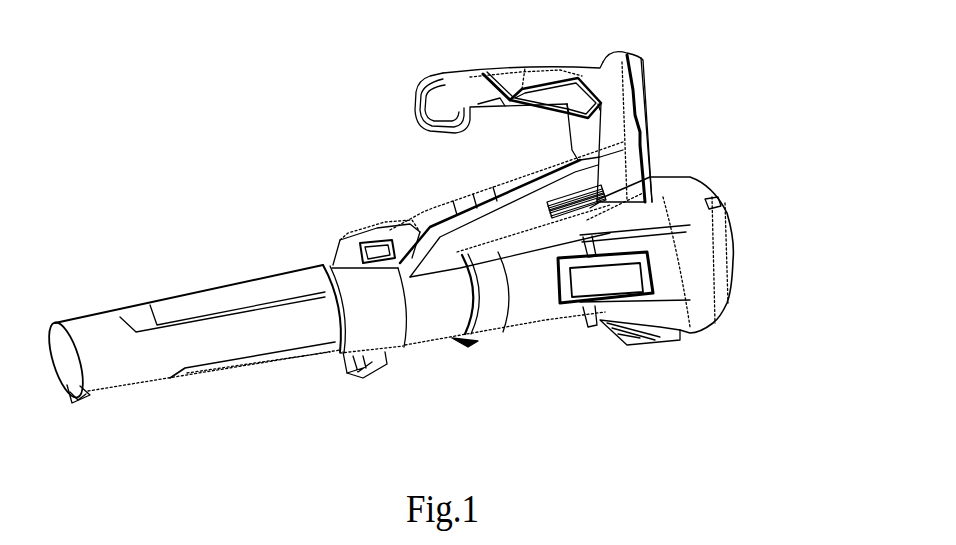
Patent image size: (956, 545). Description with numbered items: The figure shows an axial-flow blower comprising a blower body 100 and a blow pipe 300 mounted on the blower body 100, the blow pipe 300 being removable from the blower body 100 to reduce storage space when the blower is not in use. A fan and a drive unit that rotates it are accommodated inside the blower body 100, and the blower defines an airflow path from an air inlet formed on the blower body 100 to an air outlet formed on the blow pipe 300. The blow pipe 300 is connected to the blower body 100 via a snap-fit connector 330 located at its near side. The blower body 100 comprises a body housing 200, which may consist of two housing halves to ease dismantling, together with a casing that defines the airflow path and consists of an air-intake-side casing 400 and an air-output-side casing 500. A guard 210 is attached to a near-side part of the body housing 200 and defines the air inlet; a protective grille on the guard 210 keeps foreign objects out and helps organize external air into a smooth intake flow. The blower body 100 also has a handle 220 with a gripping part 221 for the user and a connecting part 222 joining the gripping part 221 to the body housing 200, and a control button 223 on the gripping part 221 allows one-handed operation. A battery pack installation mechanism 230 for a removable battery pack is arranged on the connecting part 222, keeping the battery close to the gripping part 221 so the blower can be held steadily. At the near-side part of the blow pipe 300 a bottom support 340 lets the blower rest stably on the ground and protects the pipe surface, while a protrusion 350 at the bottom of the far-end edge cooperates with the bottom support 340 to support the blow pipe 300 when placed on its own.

The blower body 100 is at (412, 188).
The body housing 200 is at (690, 317).
The guard 210 is at (735, 257).
The handle 220 is at (447, 72).
The gripping part 221 is at (538, 68).
The connecting part 222 is at (568, 138).
The control button 223 is at (500, 106).
The battery pack installation mechanism 230 is at (652, 117).
The blow pipe 300 is at (200, 303).
The snap-fit connector 330 is at (363, 232).
The bottom support 340 is at (347, 373).
The protrusion 350 is at (77, 393).
The air-intake-side casing 400 is at (537, 316).
The air-output-side casing 500 is at (435, 332).